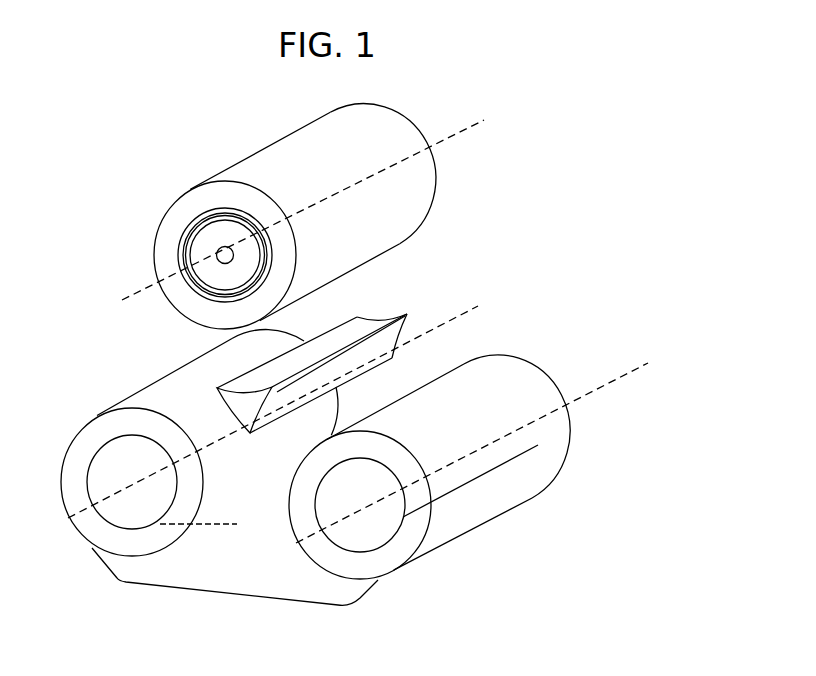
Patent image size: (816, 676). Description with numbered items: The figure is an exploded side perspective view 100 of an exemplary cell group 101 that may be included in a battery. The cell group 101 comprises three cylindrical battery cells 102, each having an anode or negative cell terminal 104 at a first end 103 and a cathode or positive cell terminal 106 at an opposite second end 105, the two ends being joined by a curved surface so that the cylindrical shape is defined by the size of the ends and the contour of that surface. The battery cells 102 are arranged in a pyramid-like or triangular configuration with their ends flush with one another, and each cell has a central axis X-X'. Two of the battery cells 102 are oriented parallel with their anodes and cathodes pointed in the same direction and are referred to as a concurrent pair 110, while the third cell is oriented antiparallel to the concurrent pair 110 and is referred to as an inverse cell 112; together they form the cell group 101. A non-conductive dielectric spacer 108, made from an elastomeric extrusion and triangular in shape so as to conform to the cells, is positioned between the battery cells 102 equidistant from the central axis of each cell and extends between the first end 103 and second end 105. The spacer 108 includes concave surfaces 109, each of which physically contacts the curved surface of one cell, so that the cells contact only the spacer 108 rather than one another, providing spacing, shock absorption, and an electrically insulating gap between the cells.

The exploded side perspective view 100 is at (603, 73).
The cell group 101 is at (539, 229).
The cylindrical battery cell 102 is at (166, 212).
The first end 103 is at (218, 292).
The anode 104 is at (180, 244).
The second end 105 is at (420, 109).
The cathode 106 is at (128, 436).
The spacer 108 is at (259, 419).
The concave surfaces 109 is at (359, 318).
The concurrent pair 110 is at (234, 598).
The inverse cell 112 is at (198, 170).